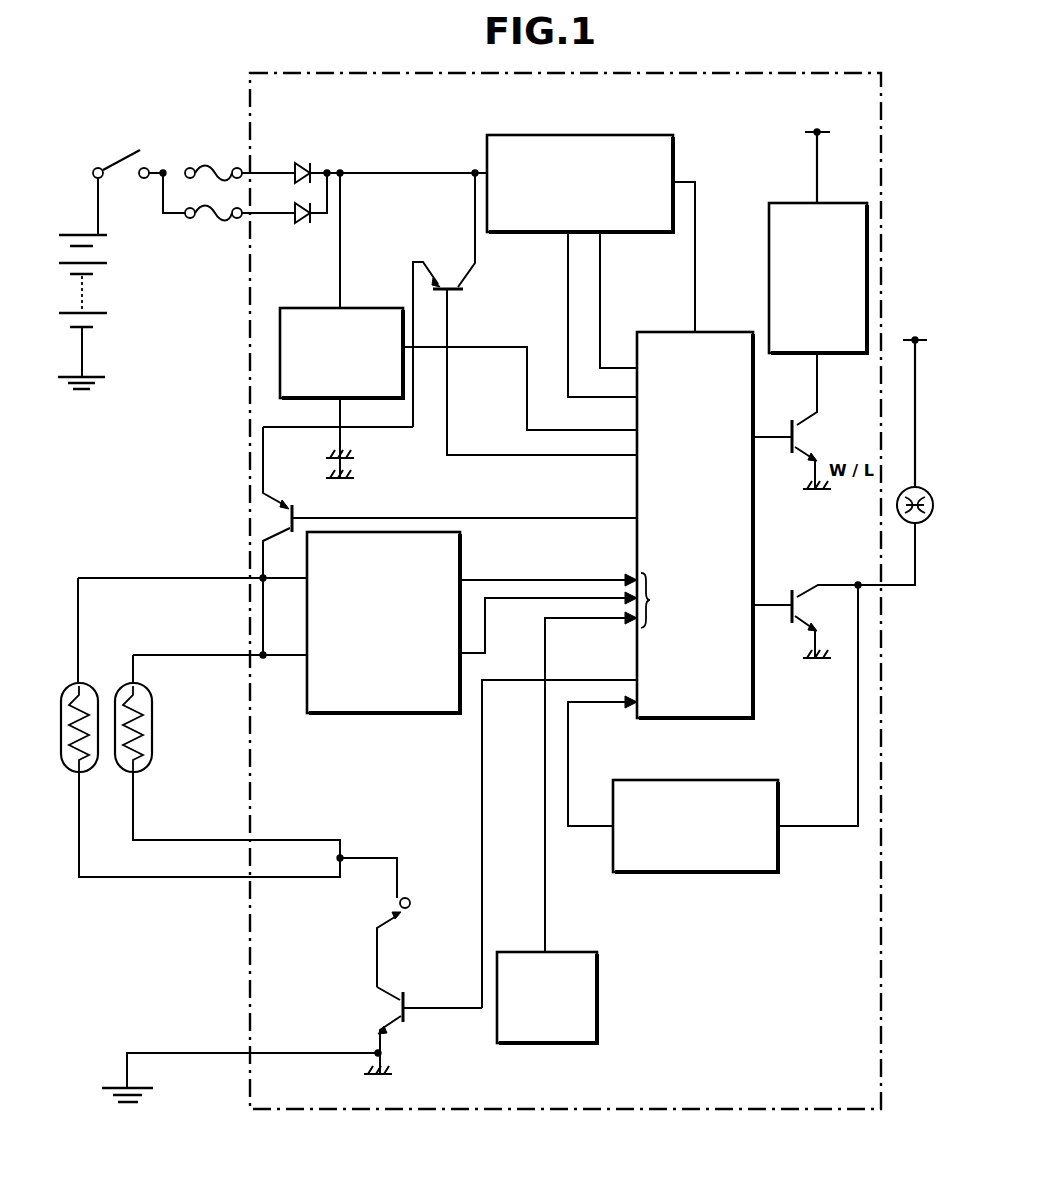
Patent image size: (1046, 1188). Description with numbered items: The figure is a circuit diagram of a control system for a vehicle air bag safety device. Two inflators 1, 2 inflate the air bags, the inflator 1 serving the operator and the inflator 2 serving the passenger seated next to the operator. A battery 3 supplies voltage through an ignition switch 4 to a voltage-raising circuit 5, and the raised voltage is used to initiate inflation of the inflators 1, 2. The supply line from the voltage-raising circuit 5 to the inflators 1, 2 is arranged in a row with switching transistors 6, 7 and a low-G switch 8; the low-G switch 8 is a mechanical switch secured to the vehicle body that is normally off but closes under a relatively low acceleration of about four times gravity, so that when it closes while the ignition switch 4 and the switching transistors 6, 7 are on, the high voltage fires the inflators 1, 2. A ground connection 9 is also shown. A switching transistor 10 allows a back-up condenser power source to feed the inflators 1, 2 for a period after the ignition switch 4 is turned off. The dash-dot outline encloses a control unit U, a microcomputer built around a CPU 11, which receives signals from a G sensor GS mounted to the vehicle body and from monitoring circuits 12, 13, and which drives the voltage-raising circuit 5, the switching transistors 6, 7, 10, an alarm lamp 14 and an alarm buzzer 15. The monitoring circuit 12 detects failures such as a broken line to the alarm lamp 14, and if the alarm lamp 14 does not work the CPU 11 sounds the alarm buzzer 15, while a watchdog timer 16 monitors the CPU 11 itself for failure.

The inflator 1 is at (170, 762).
The inflator 2 is at (94, 773).
The battery 3 is at (90, 299).
The ignition switch 4 is at (98, 168).
The voltage-raising circuit 5 is at (280, 333).
The switching transistor 6 is at (279, 520).
The switching transistor 7 is at (410, 1022).
The low-G switch 8 is at (414, 905).
The ground 9 is at (352, 462).
The switching transistor 10 is at (428, 278).
The central processing unit 11 is at (756, 700).
The monitoring circuit 12 is at (322, 714).
The monitoring circuit 13 is at (779, 862).
The alarm lamp 14 is at (877, 469).
The alarm buzzer 15 is at (868, 214).
The watchdog timer 16 is at (675, 144).
The G sensor GS is at (598, 1010).
The control unit U is at (478, 1112).